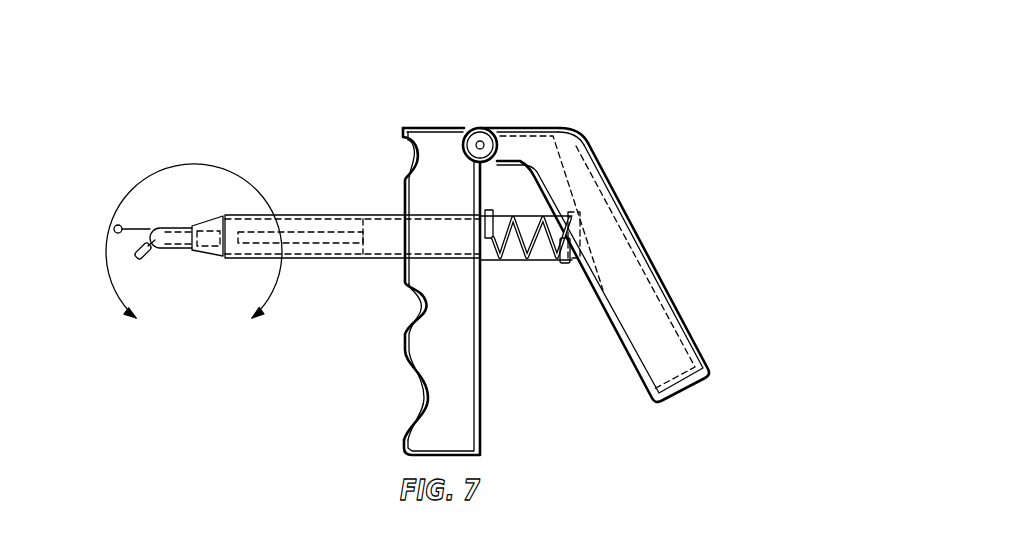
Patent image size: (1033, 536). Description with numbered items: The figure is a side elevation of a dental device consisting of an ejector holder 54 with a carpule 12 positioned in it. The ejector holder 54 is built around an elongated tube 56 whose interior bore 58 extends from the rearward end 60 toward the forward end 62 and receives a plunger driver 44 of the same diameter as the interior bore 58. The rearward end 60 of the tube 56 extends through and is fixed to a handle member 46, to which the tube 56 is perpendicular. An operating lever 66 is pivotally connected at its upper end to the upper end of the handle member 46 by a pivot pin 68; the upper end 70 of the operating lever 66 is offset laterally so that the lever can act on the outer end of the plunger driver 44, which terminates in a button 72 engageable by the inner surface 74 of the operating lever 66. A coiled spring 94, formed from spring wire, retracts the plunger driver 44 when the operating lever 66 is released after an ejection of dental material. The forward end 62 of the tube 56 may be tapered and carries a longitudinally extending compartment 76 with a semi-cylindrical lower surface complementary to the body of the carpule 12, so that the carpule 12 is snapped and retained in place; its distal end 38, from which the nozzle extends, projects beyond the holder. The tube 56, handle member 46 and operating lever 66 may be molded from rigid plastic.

The carpule 12 is at (160, 228).
The distal end 38 is at (145, 242).
The plunger driver 44 is at (385, 235).
The handle member 46 is at (457, 406).
The ejector holder 54 is at (655, 95).
The tube 56 is at (300, 214).
The interior bore 58 is at (312, 253).
The rearward end 60 is at (513, 205).
The forward end 62 is at (243, 203).
The operating lever 66 is at (655, 266).
The pivot pin 68 is at (481, 140).
The upper end 70 is at (583, 120).
The button 72 is at (573, 266).
The inner surface 74 is at (605, 285).
The compartment 76 is at (212, 225).
The coiled spring 94 is at (513, 264).